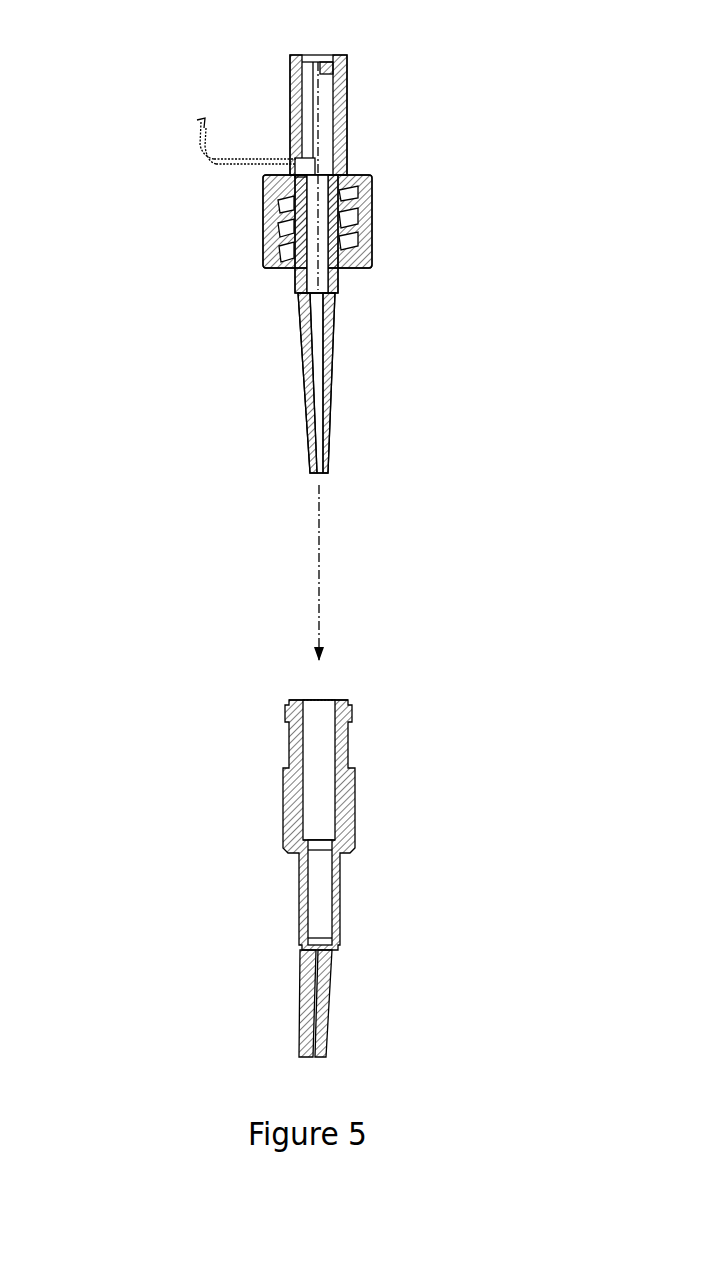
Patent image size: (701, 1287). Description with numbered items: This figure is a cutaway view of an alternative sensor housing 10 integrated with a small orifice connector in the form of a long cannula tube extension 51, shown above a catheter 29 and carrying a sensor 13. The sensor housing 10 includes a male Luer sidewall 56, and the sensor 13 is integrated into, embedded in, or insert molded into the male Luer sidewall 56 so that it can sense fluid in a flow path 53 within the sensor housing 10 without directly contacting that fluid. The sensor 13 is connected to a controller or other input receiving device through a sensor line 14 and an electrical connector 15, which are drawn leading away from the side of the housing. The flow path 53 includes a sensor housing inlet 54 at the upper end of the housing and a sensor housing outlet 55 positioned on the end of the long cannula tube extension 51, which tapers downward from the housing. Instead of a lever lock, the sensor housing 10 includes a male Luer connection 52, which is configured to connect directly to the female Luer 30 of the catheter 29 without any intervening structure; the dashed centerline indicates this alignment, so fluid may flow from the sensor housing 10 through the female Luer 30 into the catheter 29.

The sensor housing 10 is at (417, 132).
The sensor 13 is at (298, 180).
The sensor line 14 is at (193, 157).
The electrical connector 15 is at (205, 124).
The catheter 29 is at (255, 842).
The female Luer 30 is at (316, 693).
The long cannula tube extension 51 is at (322, 407).
The male Luer connection 52 is at (375, 237).
The flow path 53 is at (327, 67).
The sensor housing inlet 54 is at (312, 52).
The sensor housing outlet 55 is at (325, 478).
The male Luer sidewall 56 is at (292, 129).